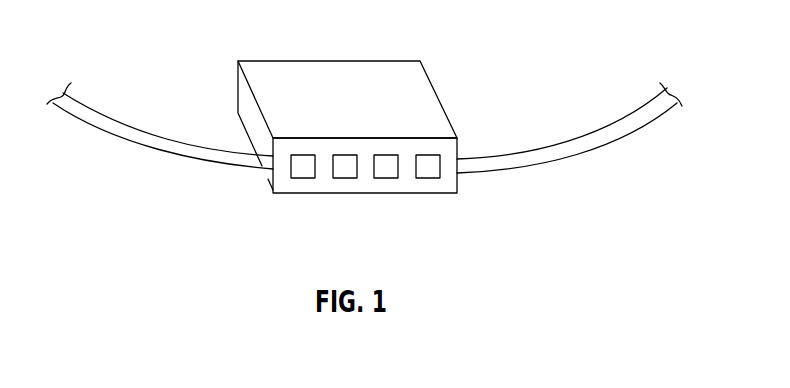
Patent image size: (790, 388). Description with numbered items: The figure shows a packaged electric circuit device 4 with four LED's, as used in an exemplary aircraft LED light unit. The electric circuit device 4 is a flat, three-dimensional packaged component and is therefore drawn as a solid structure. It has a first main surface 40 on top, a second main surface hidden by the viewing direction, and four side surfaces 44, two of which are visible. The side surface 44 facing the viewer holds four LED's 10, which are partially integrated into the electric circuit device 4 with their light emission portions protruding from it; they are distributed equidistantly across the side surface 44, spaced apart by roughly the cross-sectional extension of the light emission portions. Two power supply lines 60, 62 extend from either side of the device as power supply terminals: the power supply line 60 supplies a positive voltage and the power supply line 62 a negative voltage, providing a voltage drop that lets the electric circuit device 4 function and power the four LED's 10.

The electric circuit device 4 is at (328, 125).
The first main surface 40 is at (417, 92).
The side surfaces 44 is at (245, 102).
The LED's 10 is at (428, 165).
The power supply line 60 is at (563, 143).
The power supply line 62 is at (80, 125).